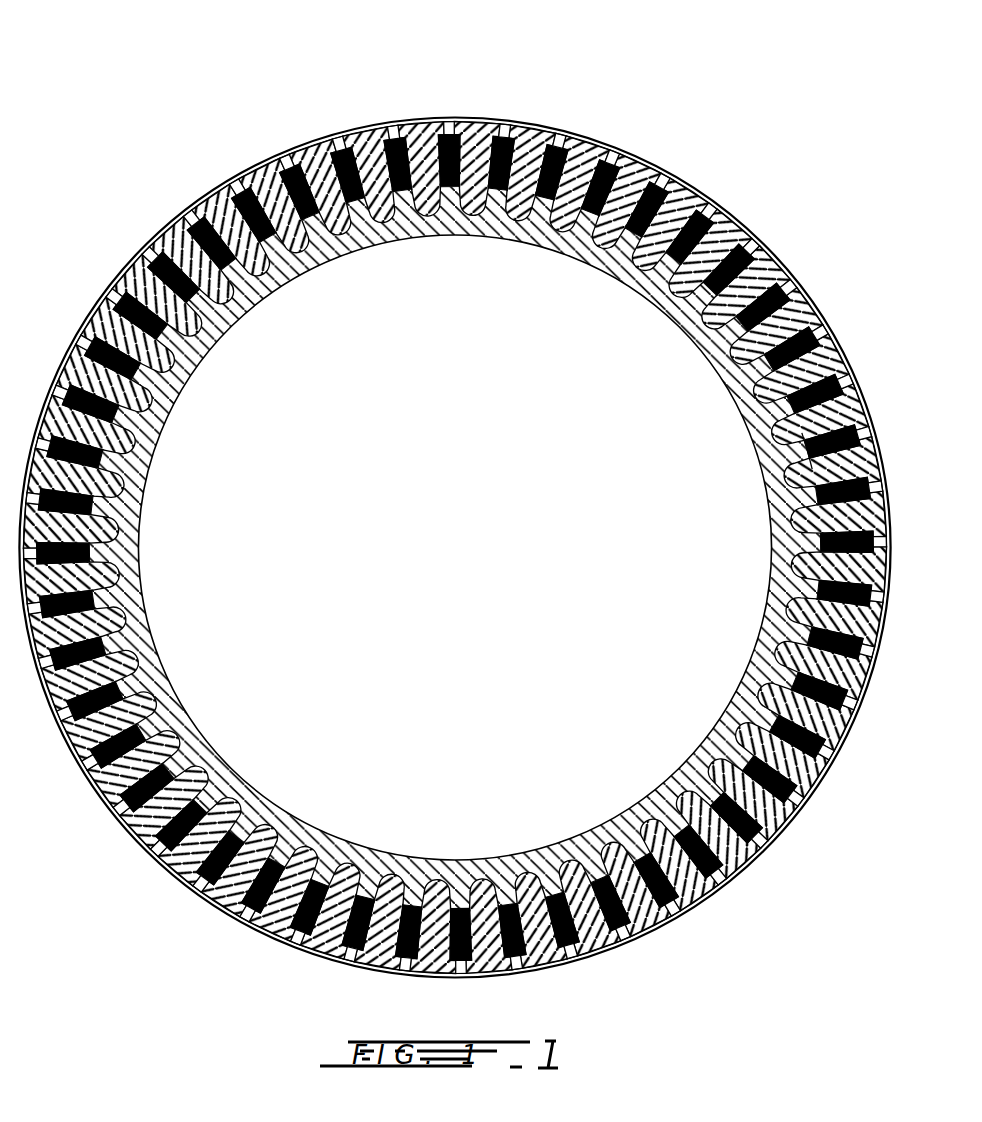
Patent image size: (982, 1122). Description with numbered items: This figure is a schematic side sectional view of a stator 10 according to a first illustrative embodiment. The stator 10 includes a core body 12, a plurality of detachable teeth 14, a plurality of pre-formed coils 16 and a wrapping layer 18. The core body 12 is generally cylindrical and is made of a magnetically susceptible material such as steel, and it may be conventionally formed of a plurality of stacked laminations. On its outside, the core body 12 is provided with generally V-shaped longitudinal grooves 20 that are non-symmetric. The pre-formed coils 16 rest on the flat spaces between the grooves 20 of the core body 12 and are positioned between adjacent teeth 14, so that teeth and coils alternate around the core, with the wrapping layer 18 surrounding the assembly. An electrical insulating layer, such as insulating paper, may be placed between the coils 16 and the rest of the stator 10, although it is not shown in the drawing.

The stator 10 is at (698, 86).
The core body 12 is at (443, 225).
The detachable teeth 14 is at (588, 138).
The pre-formed coils 16 is at (660, 268).
The wrapping layer 18 is at (793, 288).
The longitudinal grooves 20 is at (777, 457).